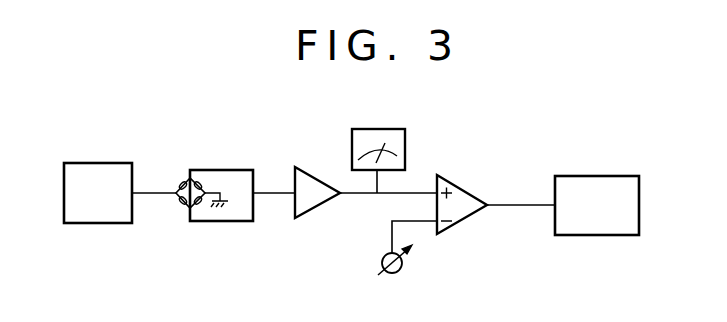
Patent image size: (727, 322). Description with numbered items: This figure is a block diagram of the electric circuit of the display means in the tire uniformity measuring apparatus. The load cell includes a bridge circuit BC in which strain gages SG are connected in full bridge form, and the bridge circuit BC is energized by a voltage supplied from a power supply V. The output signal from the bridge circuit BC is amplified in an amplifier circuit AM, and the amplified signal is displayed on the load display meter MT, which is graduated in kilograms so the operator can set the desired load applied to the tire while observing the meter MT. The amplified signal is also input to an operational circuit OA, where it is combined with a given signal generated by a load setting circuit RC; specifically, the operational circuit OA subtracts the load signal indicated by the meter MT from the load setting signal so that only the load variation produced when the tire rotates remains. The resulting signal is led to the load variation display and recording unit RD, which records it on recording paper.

The power supply V is at (98, 193).
The strain gages SG is at (200, 201).
The bridge circuit BC is at (189, 220).
The amplifier circuit AM is at (320, 202).
The load display meter MT is at (405, 141).
The operational circuit OA is at (468, 210).
The load setting circuit RC is at (403, 265).
The load variation display and recording unit RD is at (597, 205).